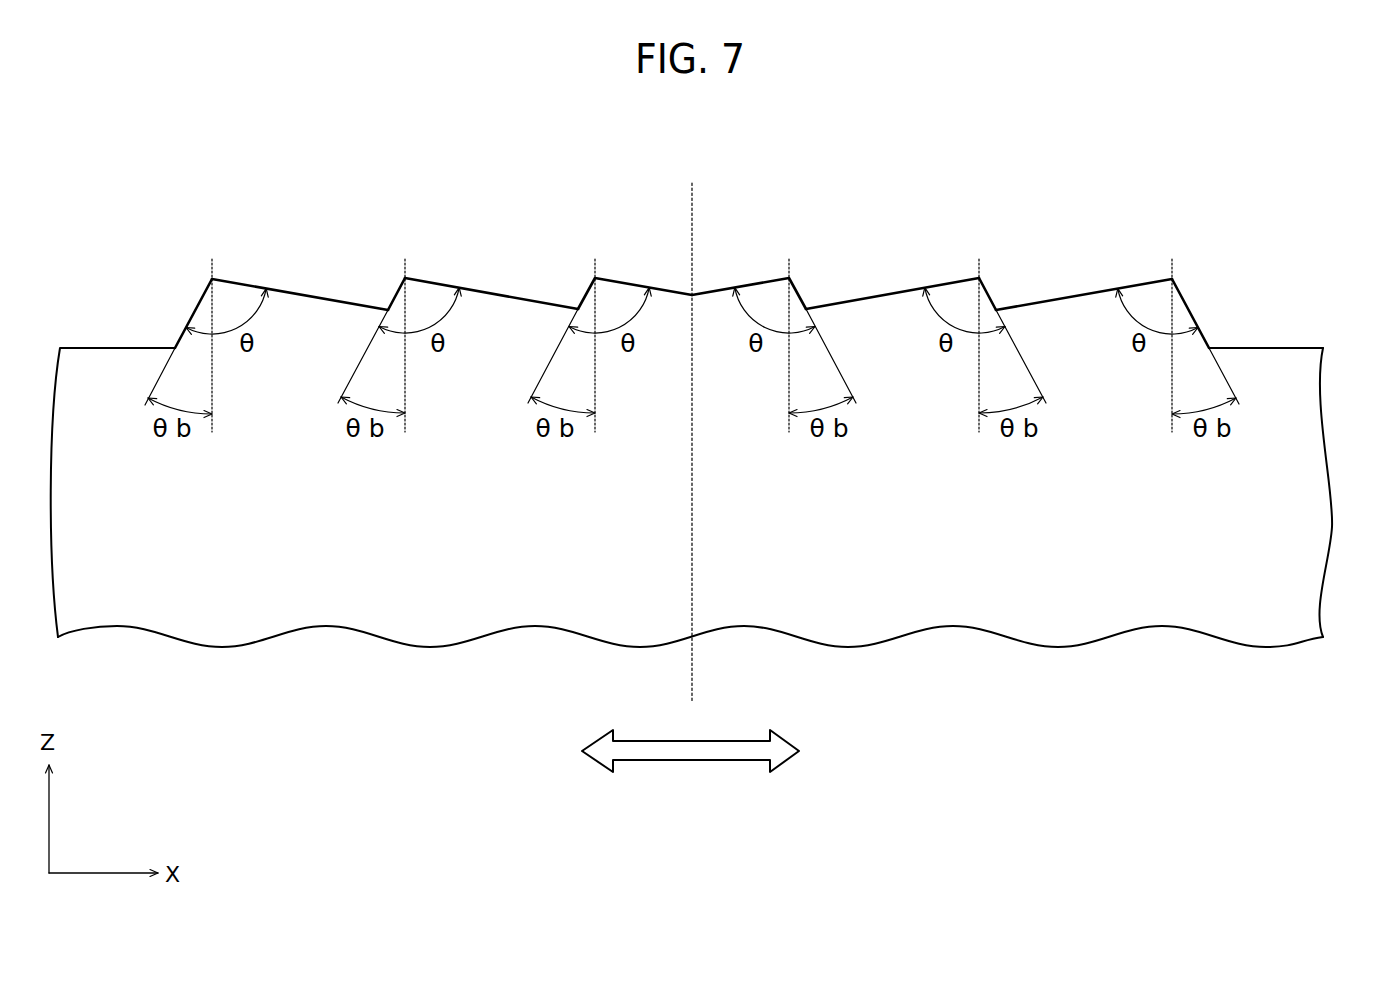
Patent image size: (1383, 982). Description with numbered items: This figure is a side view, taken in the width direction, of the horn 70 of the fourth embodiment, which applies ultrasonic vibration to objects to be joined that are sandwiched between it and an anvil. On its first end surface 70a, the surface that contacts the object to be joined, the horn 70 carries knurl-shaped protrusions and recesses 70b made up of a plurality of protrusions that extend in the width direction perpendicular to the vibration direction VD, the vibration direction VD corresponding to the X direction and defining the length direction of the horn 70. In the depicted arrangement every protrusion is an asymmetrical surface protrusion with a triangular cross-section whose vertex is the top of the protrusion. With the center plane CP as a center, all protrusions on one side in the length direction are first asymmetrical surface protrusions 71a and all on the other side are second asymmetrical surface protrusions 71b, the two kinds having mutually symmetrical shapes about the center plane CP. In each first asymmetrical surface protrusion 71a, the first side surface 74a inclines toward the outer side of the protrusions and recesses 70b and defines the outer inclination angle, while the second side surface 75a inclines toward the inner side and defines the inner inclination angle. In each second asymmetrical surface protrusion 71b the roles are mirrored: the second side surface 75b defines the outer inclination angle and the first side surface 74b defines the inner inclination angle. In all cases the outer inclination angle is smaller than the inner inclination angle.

The horn 70 is at (1165, 588).
The first end surface 70a is at (1283, 347).
The protrusions and recesses 70b is at (568, 262).
The first asymmetrical surface protrusion 71a is at (285, 302).
The second asymmetrical surface protrusion 71b is at (717, 305).
The first side surface 74a is at (189, 322).
The first side surface 74b is at (949, 282).
The second side surface 75a is at (240, 284).
The second side surface 75b is at (993, 300).
The center plane CP is at (690, 218).
The vibration direction VD is at (691, 760).